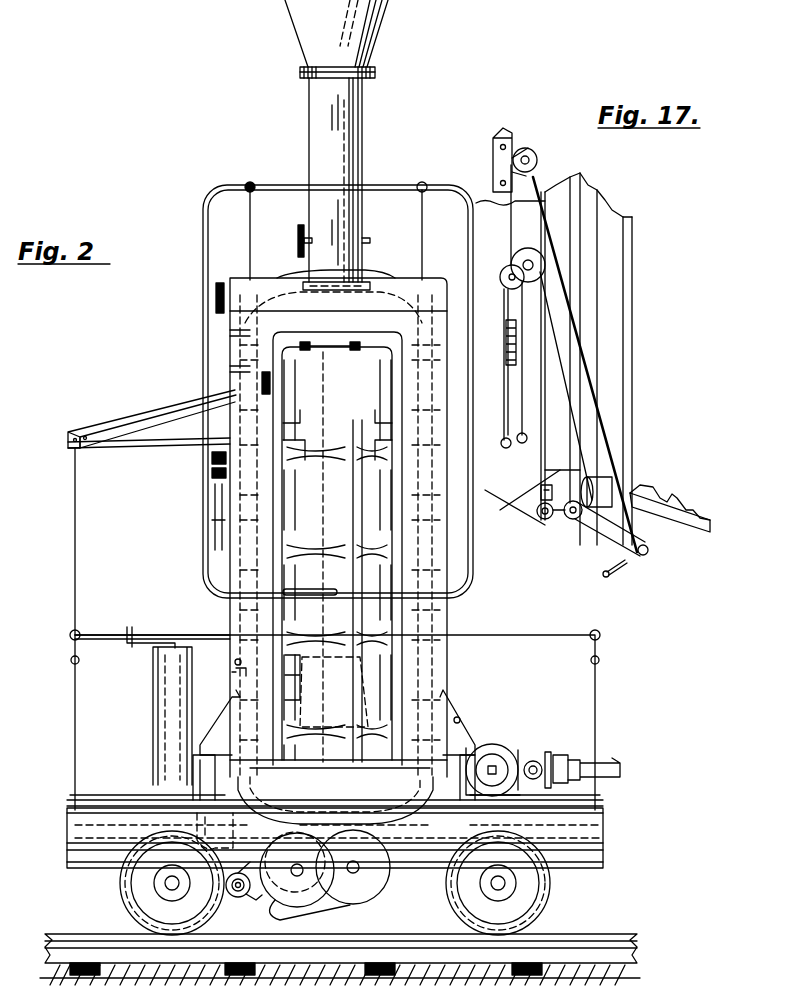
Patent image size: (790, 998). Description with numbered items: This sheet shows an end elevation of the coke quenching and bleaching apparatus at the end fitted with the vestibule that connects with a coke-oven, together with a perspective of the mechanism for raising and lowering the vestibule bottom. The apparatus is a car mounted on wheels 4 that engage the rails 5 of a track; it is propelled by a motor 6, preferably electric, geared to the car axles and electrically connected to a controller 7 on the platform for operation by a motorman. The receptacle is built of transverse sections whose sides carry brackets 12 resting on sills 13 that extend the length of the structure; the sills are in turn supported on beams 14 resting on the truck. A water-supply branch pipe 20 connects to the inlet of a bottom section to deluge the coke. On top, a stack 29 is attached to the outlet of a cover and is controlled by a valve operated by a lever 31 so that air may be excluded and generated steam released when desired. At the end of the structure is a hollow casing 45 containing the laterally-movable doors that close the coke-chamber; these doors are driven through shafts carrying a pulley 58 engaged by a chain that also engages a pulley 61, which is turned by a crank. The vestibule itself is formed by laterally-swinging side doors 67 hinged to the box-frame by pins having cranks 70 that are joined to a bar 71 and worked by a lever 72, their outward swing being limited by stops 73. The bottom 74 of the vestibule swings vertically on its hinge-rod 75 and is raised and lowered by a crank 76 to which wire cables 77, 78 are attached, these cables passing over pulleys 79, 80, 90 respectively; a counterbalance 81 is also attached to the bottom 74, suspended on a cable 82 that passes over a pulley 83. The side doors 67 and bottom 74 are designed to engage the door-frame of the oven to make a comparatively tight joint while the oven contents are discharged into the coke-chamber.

In FIG. 2, the wheels 4 is at (335, 883).
In FIG. 2, the rails 5 is at (340, 949).
In FIG. 2, the motor 6 is at (293, 868).
In FIG. 2, the controller 7 is at (155, 722).
In FIG. 2, the brackets 12 is at (232, 695).
In FIG. 2, the sills 13 is at (500, 732).
In FIG. 2, the beams 14 is at (67, 836).
In FIG. 2, the water-supply branch pipe 20 is at (515, 750).
In FIG. 2, the stack 29 is at (355, 133).
In FIG. 2, the lever 31 is at (298, 240).
In FIG. 2, the hollow casing 45 is at (266, 345).
In FIG. 2, the pulley 58 is at (215, 294).
In FIG. 2, the pulley 61 is at (215, 536).
In FIG. 2, the side doors 67 is at (335, 430).
In FIG. 2, the cranks 70 is at (297, 348).
In FIG. 2, the bar 71 is at (336, 340).
In FIG. 2, the lever 72 is at (265, 712).
In FIG. 2, the stops 73 is at (310, 582).
In FIG. 2, the bottom of the vestibule 74 is at (334, 692).
In FIG. 17, the bottom of the vestibule 74 is at (670, 508).
In FIG. 17, the hinge-rod 75 is at (570, 520).
In FIG. 17, the crank 76 is at (620, 540).
In FIG. 17, the wire cable 77 is at (542, 385).
In FIG. 17, the wire cable 78 is at (504, 410).
In FIG. 2, the pulley 79 is at (212, 475).
In FIG. 17, the pulley 79 is at (528, 256).
In FIG. 2, the pulley 80 is at (212, 459).
In FIG. 17, the pulley 80 is at (502, 277).
In FIG. 17, the counterbalance 81 is at (506, 362).
In FIG. 17, the cable 82 is at (606, 418).
In FIG. 2, the pulley 83 is at (271, 385).
In FIG. 17, the pulley 83 is at (531, 153).
In FIG. 17, the pulley 90 is at (542, 520).